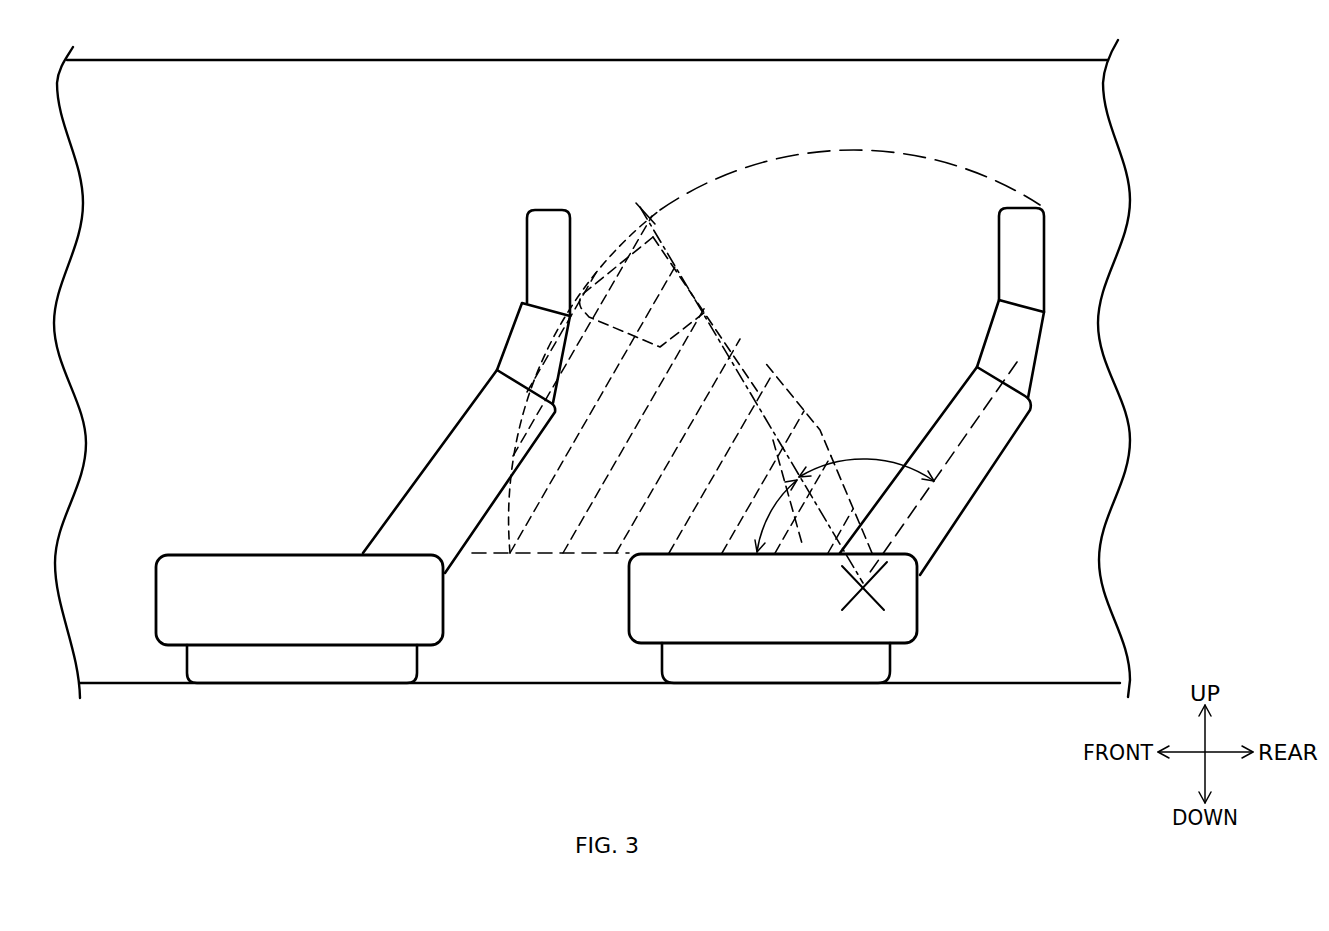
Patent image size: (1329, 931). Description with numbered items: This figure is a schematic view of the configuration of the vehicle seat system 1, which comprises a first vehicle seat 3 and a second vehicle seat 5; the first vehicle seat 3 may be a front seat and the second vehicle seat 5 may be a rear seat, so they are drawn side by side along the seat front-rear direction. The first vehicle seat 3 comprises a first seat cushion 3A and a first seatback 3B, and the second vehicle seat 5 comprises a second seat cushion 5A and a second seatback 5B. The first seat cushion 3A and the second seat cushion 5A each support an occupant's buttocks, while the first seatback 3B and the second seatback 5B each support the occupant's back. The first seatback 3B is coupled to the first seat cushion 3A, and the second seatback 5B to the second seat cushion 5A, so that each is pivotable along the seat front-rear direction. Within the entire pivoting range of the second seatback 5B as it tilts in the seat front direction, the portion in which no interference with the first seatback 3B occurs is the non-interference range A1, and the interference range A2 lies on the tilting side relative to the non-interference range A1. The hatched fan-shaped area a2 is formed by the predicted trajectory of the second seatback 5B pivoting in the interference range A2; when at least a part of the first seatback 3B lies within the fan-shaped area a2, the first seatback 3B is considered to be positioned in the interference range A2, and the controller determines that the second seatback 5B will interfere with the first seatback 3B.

The vehicle seat system 1 is at (478, 713).
The first vehicle seat 3 is at (267, 650).
The first seat cushion 3A is at (233, 578).
The first seatback 3B is at (445, 458).
The second vehicle seat 5 is at (747, 650).
The second seat cushion 5A is at (672, 583).
The second seatback 5B is at (950, 420).
The fan-shaped area a2 is at (635, 262).
The non-interference range A1 is at (866, 452).
The interference range A2 is at (763, 516).